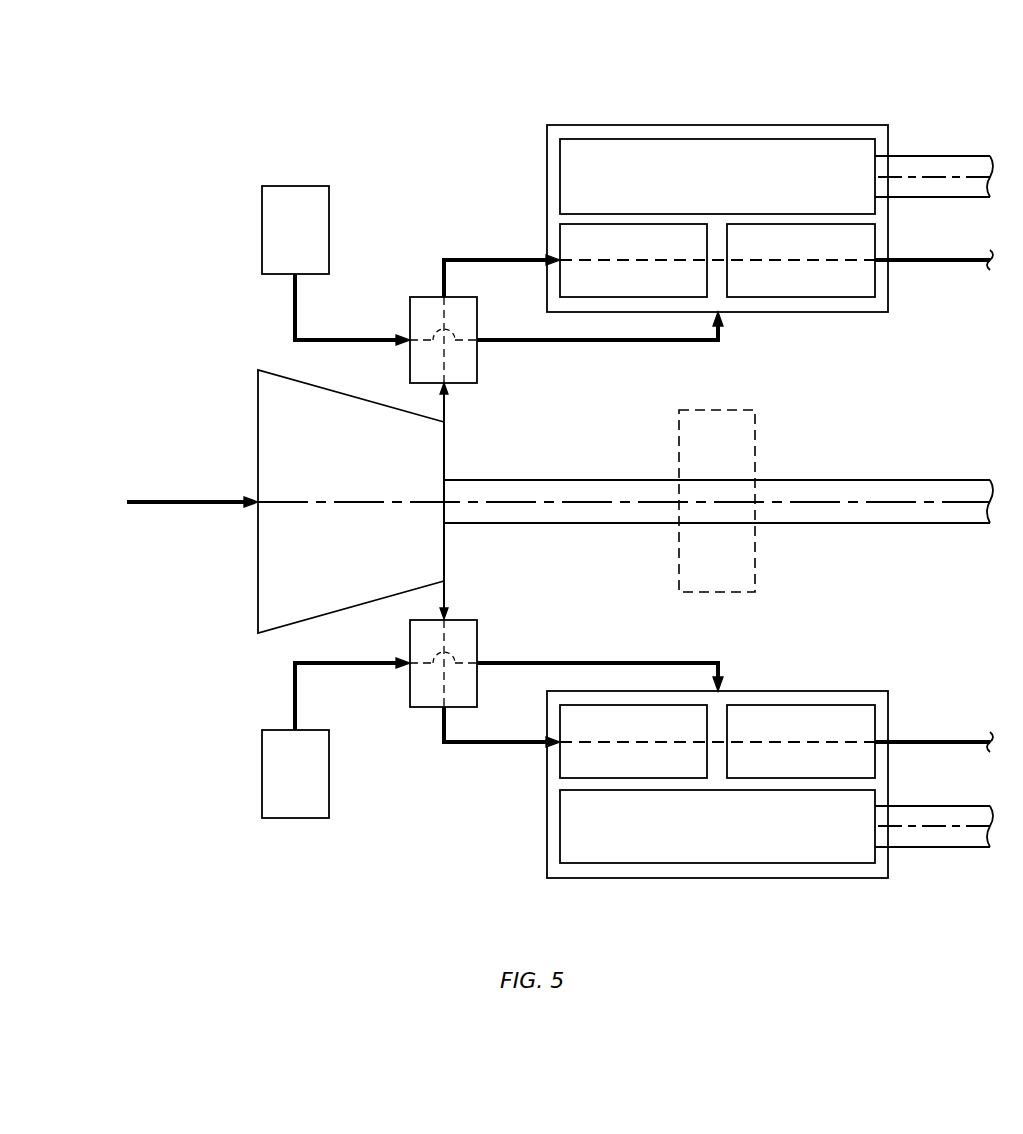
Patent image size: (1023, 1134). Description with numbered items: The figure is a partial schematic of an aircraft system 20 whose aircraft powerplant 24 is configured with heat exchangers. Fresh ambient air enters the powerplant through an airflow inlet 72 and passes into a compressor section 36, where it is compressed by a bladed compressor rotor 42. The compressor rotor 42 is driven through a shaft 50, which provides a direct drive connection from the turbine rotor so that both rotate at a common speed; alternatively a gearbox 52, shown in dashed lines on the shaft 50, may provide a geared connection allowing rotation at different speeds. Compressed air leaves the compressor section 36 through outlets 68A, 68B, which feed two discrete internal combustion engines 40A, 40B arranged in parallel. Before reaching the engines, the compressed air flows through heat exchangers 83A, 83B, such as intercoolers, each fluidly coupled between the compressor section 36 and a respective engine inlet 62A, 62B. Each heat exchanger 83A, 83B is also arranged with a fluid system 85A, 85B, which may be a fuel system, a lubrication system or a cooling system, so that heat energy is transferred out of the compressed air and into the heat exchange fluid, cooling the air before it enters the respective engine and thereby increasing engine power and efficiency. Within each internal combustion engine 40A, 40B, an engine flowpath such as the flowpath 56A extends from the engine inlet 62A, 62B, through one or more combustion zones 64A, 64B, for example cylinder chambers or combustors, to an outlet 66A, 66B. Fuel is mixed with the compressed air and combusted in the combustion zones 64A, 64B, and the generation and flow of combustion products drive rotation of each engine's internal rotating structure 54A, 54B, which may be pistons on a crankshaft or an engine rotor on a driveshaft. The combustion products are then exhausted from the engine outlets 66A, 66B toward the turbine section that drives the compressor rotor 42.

The system 20 is at (106, 139).
The aircraft powerplant 24 is at (217, 151).
The compressor section 36 is at (218, 373).
The internal combustion engine 40A is at (770, 213).
The internal combustion engine 40B is at (770, 825).
The compressor rotor 42 is at (257, 435).
The shaft 50 is at (878, 480).
The gearbox 52 is at (755, 430).
The rotating structure 54A is at (735, 139).
The rotating structure 54B is at (735, 878).
The engine flowpath 56A is at (803, 263).
The inlet 62A is at (560, 257).
The inlet 62B is at (560, 747).
The combustion zones 64A is at (645, 224).
The combustion zones 64B is at (645, 778).
The outlet 66A is at (877, 263).
The outlet 66B is at (877, 740).
The outlet 68A is at (443, 422).
The outlet 68B is at (443, 581).
The airflow inlet 72 is at (145, 508).
The heat exchanger 83A is at (477, 363).
The heat exchanger 83B is at (478, 640).
The fluid system 85A is at (364, 189).
The fluid system 85B is at (365, 812).